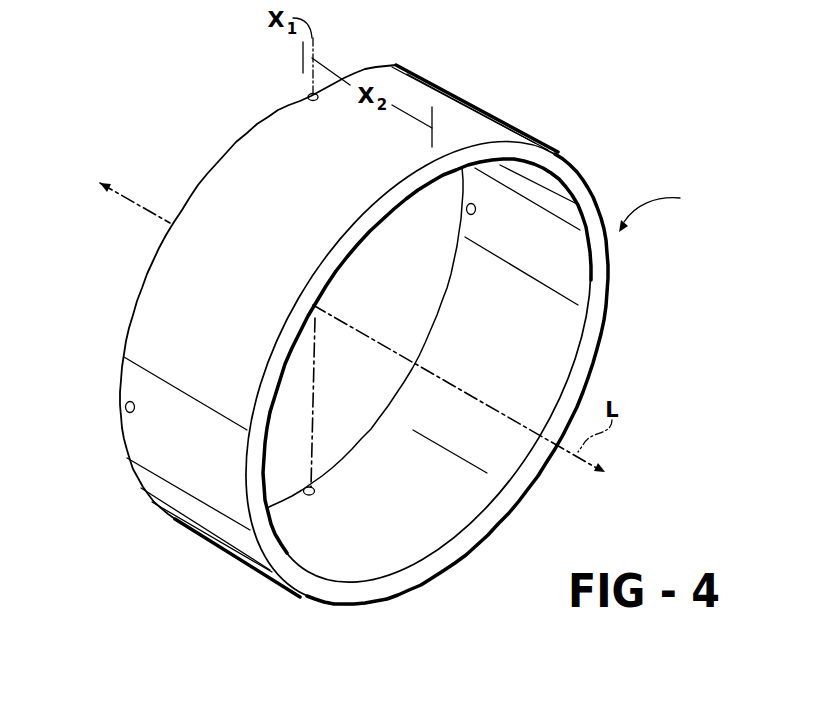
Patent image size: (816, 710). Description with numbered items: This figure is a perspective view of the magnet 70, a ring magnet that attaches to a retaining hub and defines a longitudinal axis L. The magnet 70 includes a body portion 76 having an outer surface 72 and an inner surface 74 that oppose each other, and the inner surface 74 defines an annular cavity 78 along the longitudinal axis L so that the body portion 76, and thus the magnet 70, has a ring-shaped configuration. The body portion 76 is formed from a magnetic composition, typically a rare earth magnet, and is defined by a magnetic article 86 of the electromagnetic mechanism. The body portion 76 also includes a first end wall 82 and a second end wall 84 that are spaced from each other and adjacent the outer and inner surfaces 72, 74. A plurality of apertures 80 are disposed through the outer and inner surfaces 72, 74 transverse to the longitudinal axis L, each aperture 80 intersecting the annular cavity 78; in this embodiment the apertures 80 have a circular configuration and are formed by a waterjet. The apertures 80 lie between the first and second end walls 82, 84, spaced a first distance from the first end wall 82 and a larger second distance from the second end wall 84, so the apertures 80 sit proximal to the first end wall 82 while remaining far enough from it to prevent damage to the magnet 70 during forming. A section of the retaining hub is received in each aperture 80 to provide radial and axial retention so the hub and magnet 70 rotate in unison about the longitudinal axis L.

The magnet 70 is at (557, 156).
The outer surface 72 is at (229, 185).
The inner surface 74 is at (423, 545).
The body portion 76 is at (215, 522).
The annular cavity 78 is at (487, 496).
The aperture 80 is at (296, 99).
The first end wall 82 is at (135, 320).
The second end wall 84 is at (601, 291).
The magnetic article 86 is at (665, 211).